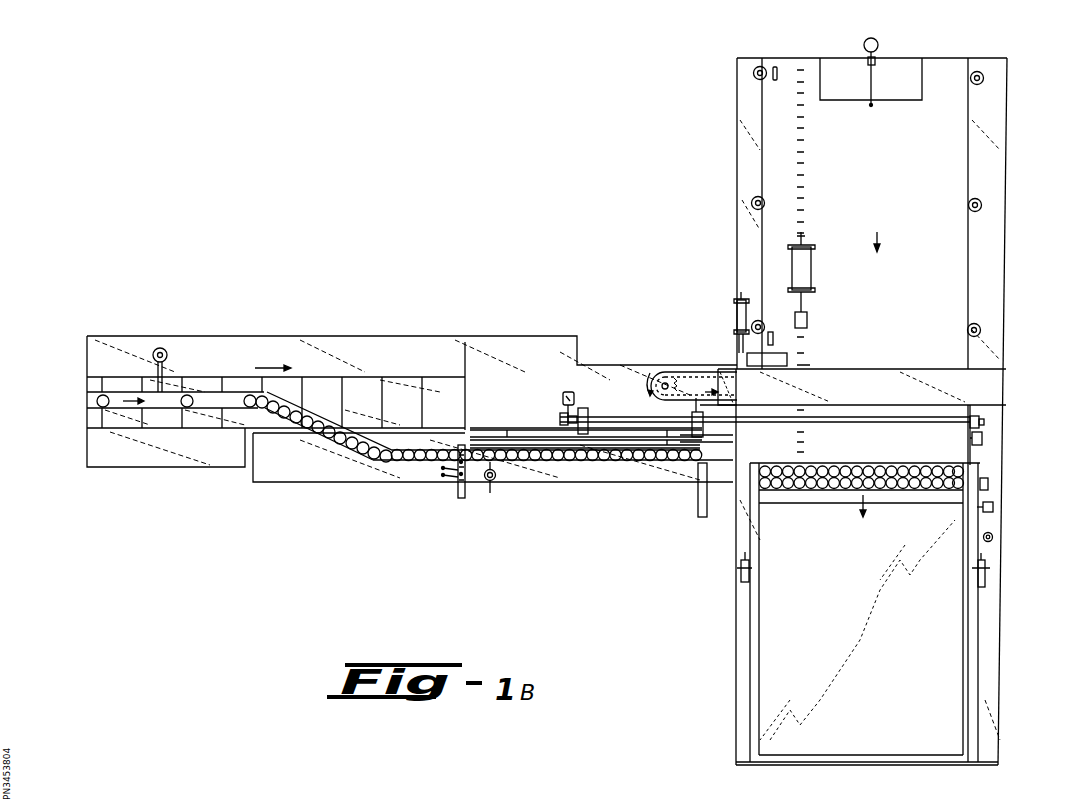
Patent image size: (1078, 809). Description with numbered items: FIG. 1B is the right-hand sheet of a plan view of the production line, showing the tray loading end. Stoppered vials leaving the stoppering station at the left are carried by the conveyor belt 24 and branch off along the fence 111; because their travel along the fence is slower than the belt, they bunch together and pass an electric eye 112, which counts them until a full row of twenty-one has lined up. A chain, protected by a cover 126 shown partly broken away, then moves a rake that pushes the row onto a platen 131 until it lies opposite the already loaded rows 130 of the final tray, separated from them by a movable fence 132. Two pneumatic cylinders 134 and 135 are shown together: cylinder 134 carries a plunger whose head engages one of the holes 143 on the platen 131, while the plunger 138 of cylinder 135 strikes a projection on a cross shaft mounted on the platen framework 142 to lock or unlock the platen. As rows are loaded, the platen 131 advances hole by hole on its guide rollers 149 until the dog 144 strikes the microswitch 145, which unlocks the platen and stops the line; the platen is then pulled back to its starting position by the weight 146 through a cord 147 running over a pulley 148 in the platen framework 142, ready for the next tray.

The conveyor belt 24 is at (198, 383).
The fence 111 is at (402, 459).
The electric eye 112 is at (462, 485).
The cover 126 is at (872, 394).
The loaded rows 130 is at (898, 488).
The platen 131 is at (921, 192).
The movable fence 132 is at (970, 463).
The pneumatic cylinder 134 is at (813, 264).
The pneumatic cylinder 135 is at (737, 310).
The plunger 138 is at (735, 342).
The platen framework 142 is at (1006, 161).
The holes 143 is at (806, 213).
The dog 144 is at (774, 66).
The microswitch 145 is at (775, 338).
The weight 146 is at (879, 40).
The cord 147 is at (870, 86).
The pulley 148 is at (866, 58).
The guide rollers 149 is at (985, 77).